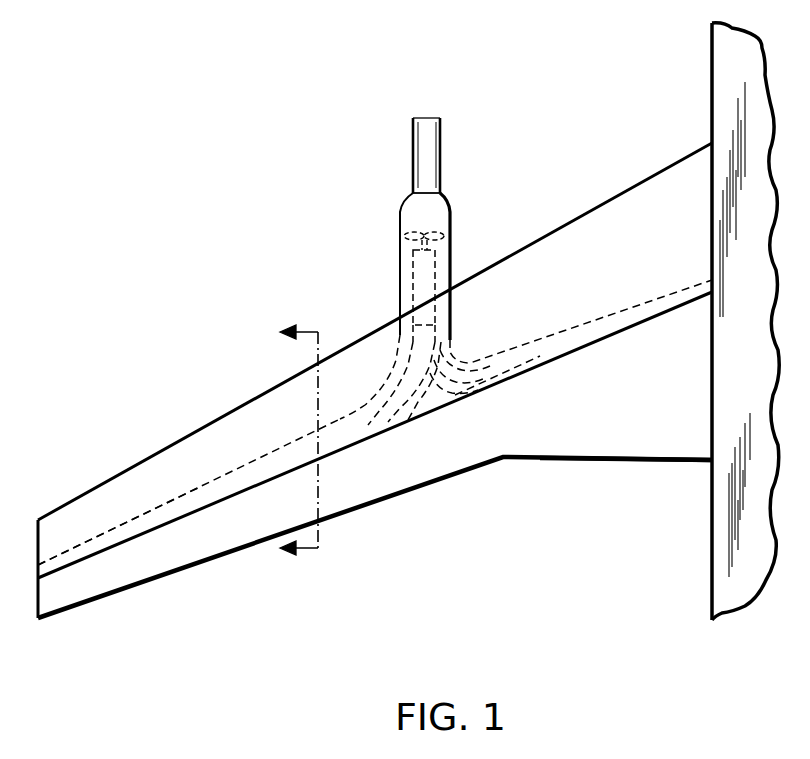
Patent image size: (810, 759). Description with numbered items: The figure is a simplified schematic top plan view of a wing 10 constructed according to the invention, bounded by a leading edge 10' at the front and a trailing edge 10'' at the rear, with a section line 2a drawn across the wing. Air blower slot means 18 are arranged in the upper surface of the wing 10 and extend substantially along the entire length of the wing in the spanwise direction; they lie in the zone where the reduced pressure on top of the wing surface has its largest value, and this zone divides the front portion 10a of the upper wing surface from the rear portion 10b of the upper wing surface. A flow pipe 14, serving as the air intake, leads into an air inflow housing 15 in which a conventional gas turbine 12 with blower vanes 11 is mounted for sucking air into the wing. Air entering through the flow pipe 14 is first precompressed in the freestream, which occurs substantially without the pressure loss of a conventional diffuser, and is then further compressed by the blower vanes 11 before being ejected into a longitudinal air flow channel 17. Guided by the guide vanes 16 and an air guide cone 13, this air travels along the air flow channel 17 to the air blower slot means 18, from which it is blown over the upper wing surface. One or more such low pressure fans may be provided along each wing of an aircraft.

The wing 10 is at (90, 513).
The leading edge 10' is at (375, 331).
The trailing edge 10'' is at (375, 537).
The front portion of the upper wing surface 10a is at (636, 280).
The rear portion of the upper wing surface 10b is at (643, 427).
The blower vanes 11 is at (413, 230).
The gas turbine 12 is at (415, 287).
The air guide cone 13 is at (397, 323).
The flow pipe 14 is at (437, 148).
The air inflow housing 15 is at (452, 207).
The guide vanes 16 is at (463, 395).
The air flow channel 17 is at (250, 462).
The air blower slot means 18 is at (262, 488).
The section line 2a is at (299, 441).